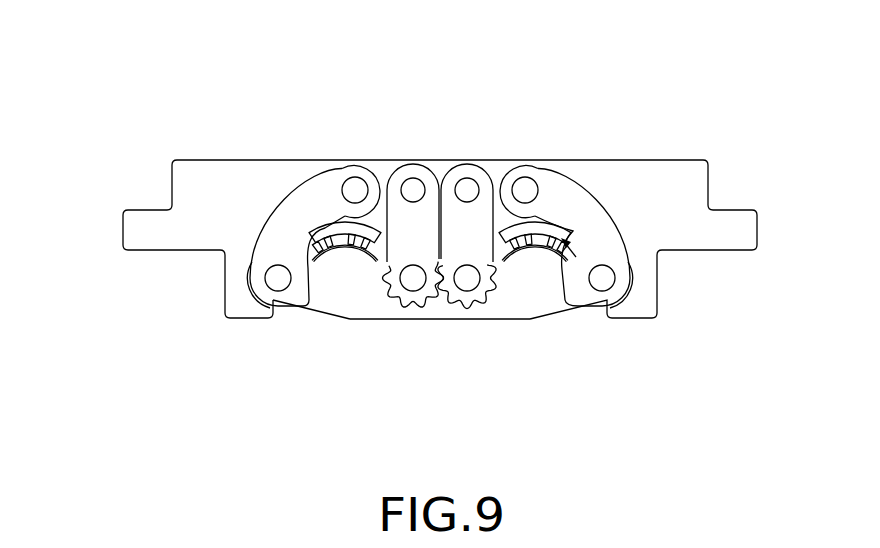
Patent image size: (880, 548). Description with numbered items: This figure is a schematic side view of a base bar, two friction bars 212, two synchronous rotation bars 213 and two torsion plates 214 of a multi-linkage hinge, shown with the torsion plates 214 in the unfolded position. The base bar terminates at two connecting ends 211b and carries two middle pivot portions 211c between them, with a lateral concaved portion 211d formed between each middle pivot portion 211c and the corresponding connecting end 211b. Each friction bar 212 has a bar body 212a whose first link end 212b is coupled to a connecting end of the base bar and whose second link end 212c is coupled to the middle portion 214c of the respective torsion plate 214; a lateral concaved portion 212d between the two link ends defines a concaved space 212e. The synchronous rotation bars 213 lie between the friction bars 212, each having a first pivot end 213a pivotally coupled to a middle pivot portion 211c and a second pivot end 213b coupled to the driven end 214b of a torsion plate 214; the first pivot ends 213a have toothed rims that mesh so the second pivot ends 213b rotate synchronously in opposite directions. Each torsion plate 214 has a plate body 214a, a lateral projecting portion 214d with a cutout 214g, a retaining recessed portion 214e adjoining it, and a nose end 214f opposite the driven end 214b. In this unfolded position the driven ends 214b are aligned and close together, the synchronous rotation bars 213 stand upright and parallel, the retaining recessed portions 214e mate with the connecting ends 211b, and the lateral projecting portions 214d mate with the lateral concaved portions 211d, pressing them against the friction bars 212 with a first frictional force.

The connecting end 211b is at (262, 298).
The middle pivot portion 211c is at (428, 339).
The lateral concaved portion 211d is at (533, 262).
The friction bar 212 is at (484, 196).
The bar body 212a is at (583, 208).
The first link end 212b is at (657, 300).
The second link end 212c is at (356, 178).
The lateral concaved portion 212d is at (655, 254).
The concaved space 212e is at (563, 285).
The synchronous rotation bar 213 is at (424, 273).
The first pivot end 213a is at (392, 300).
The second pivot end 213b is at (452, 216).
The torsion plate 214 is at (443, 229).
The plate body 214a is at (215, 173).
The driven end 214b is at (405, 177).
The middle portion 214c is at (344, 170).
The lateral projecting portion 214d is at (350, 262).
The retaining recessed portion 214e is at (268, 283).
The nose end 214f is at (137, 232).
The cutout 214g is at (338, 250).